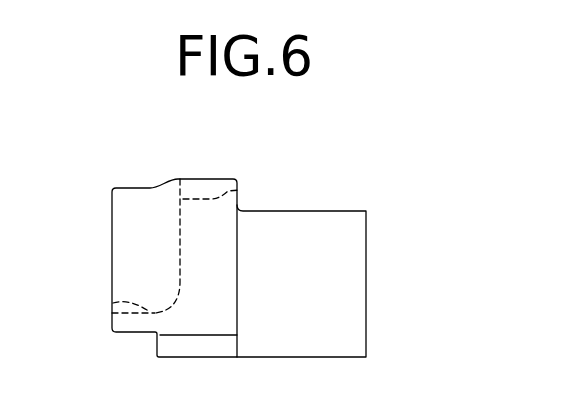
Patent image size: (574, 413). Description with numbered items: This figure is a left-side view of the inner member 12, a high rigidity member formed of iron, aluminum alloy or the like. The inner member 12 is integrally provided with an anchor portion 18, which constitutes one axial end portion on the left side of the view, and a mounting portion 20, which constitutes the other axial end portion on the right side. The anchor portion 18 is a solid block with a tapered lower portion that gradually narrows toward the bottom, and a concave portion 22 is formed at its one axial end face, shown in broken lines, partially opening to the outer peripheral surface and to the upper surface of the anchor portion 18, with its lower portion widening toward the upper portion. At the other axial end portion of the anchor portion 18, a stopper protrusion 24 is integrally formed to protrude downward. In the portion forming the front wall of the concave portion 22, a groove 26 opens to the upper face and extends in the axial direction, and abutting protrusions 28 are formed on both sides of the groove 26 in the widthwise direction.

The inner member 12 is at (340, 186).
The anchor portion 18 is at (143, 243).
The mounting portion 20 is at (348, 305).
The concave portion 22 is at (113, 303).
The stopper protrusion 24 is at (197, 347).
The groove 26 is at (240, 190).
The abutting protrusions 28 is at (207, 182).